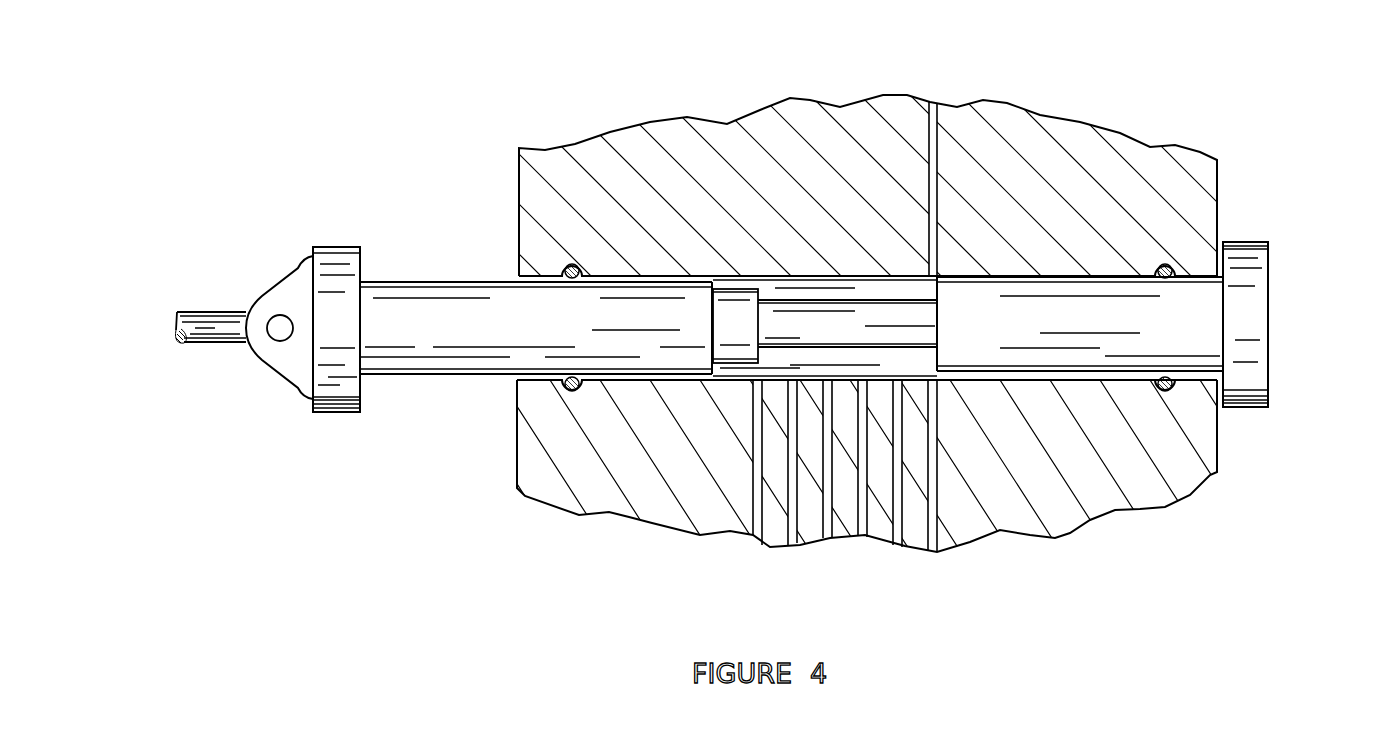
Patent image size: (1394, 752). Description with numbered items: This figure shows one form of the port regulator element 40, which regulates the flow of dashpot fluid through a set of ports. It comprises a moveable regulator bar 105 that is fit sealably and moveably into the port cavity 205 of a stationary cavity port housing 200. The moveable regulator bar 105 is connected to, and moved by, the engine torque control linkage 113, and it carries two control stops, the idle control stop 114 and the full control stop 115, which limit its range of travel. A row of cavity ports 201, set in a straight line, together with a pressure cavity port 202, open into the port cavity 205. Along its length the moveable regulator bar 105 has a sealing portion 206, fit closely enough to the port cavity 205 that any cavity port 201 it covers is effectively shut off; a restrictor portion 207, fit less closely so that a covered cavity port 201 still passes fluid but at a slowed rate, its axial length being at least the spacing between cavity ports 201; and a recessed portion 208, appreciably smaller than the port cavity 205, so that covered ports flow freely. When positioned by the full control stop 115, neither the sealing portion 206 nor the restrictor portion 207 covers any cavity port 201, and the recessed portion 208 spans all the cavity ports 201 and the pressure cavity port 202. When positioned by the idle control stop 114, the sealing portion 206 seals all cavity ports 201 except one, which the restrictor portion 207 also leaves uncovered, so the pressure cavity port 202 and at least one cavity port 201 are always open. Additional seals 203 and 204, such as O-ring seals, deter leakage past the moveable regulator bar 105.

The port regulator element 40 is at (1217, 185).
The moveable regulator bar 105 is at (488, 281).
The engine torque control linkage 113 is at (205, 313).
The idle control stop 114 is at (335, 246).
The full control stop 115 is at (1270, 282).
The stationary cavity port housing 200 is at (518, 170).
The cavity ports 201 is at (932, 552).
The pressure cavity port 202 is at (935, 101).
The seal 203 is at (1200, 381).
The seal 204 is at (572, 391).
The port cavity 205 is at (865, 288).
The sealing portion 206 is at (685, 293).
The restrictor portion 207 is at (740, 292).
The recessed portion 208 is at (910, 313).